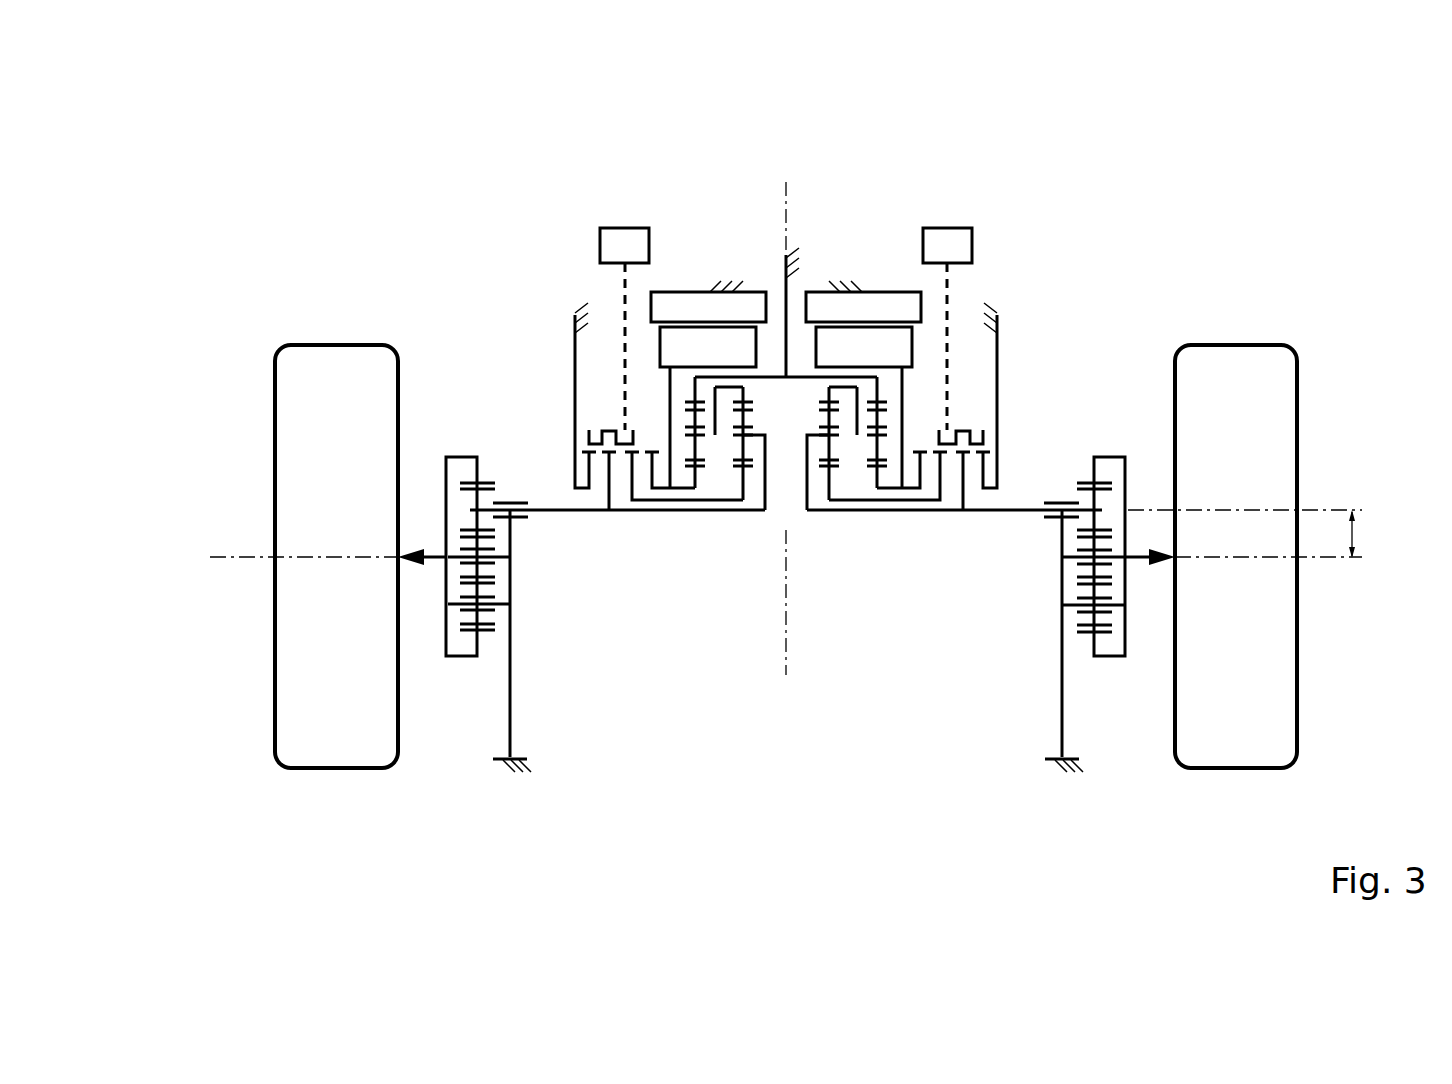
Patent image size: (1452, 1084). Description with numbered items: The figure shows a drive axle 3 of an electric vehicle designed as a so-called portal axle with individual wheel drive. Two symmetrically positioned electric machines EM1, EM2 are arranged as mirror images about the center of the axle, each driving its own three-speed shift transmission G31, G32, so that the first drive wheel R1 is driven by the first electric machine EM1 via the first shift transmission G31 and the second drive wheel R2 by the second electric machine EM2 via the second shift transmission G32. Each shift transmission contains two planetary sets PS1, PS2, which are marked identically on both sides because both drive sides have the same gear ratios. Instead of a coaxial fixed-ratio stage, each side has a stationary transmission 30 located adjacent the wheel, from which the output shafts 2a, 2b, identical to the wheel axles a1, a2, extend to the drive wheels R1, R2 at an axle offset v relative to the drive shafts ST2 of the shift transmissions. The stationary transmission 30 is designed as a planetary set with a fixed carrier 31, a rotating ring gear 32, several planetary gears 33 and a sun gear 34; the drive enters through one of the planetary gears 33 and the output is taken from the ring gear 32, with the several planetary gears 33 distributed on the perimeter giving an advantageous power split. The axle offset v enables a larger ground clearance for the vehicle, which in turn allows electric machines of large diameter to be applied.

The drive axle 3 is at (1192, 245).
The stationary transmission 30 is at (478, 446).
The fixed carrier 31 is at (1060, 705).
The rotating ring gear 32 is at (1113, 457).
The planetary gears 33 is at (1094, 500).
The sun gear 34 is at (1095, 568).
The output shaft 2a is at (435, 557).
The output shaft 2b is at (1140, 553).
The wheel axle a1 is at (255, 558).
The wheel axle a2 is at (1317, 558).
The axle offset v is at (1363, 534).
The first drive wheel R1 is at (342, 738).
The second drive wheel R2 is at (1210, 733).
The first electric machine EM1 is at (688, 285).
The second electric machine EM2 is at (878, 285).
The first three-speed shift transmission G31 is at (717, 692).
The second three-speed shift transmission G32 is at (859, 692).
The first planetary set PS1 is at (695, 522).
The second planetary set PS2 is at (744, 522).
The drive shaft ST2 is at (563, 511).